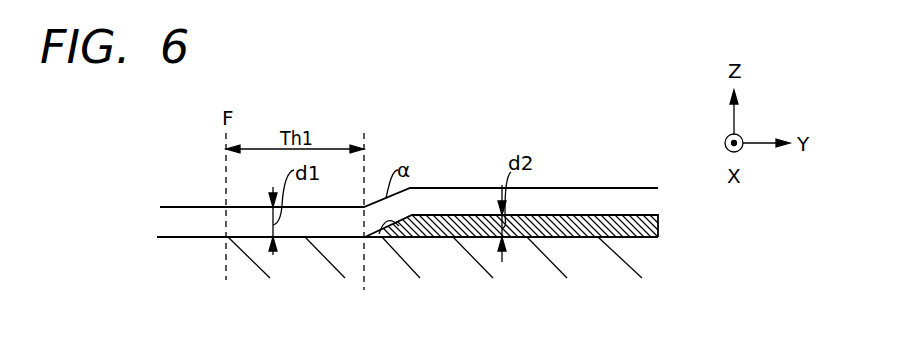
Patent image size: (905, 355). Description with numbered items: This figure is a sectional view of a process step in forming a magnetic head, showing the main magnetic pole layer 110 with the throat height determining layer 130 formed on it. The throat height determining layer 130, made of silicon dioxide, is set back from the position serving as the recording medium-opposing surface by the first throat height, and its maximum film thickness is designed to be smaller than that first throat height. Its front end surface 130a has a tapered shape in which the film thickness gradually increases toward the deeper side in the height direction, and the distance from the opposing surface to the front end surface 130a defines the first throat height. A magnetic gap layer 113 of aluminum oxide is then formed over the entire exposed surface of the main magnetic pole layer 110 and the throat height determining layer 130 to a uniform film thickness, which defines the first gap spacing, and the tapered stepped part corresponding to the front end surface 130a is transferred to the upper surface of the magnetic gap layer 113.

The main magnetic pole layer 110 is at (637, 257).
The magnetic gap layer 113 is at (590, 200).
The throat height determining layer 130 is at (658, 227).
The front end surface 130a is at (399, 230).